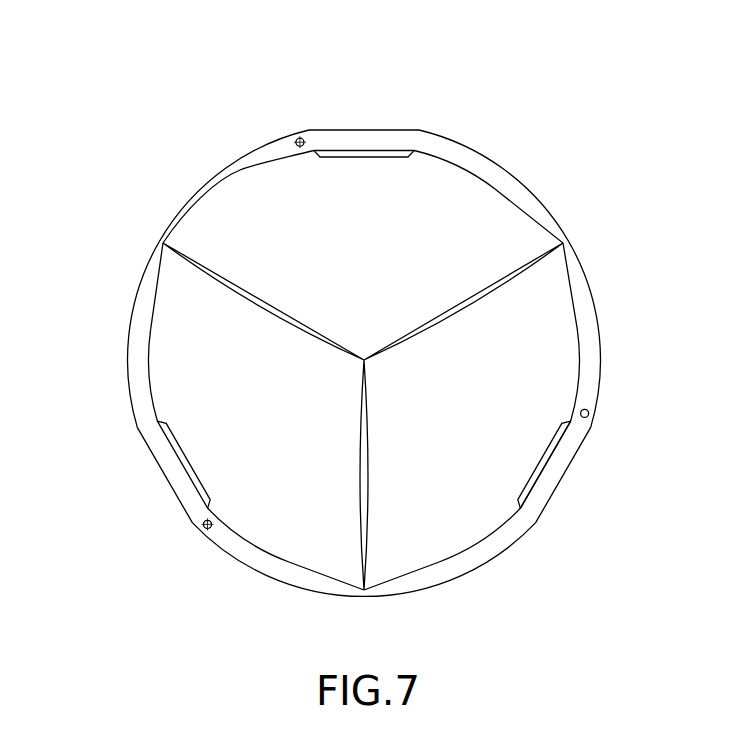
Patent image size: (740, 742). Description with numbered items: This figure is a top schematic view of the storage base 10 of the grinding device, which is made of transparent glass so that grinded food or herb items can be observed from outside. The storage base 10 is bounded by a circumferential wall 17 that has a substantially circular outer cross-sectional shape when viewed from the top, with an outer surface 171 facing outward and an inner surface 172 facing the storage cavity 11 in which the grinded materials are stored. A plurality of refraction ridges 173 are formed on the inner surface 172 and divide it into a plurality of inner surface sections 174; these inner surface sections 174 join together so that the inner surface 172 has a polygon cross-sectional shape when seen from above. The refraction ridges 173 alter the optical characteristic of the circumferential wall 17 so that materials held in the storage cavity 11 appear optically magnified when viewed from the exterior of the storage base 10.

The storage base 10 is at (360, 326).
The storage cavity 11 is at (235, 388).
The circumferential wall 17 is at (360, 326).
The outer surface 171 is at (515, 176).
The inner surface 172 is at (572, 332).
The refraction ridges 173 is at (163, 242).
The inner surface sections 174 is at (243, 172).